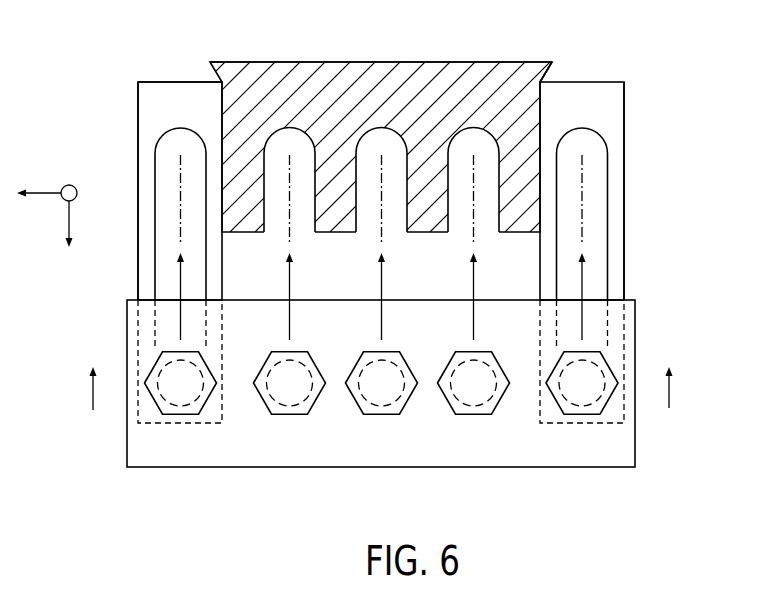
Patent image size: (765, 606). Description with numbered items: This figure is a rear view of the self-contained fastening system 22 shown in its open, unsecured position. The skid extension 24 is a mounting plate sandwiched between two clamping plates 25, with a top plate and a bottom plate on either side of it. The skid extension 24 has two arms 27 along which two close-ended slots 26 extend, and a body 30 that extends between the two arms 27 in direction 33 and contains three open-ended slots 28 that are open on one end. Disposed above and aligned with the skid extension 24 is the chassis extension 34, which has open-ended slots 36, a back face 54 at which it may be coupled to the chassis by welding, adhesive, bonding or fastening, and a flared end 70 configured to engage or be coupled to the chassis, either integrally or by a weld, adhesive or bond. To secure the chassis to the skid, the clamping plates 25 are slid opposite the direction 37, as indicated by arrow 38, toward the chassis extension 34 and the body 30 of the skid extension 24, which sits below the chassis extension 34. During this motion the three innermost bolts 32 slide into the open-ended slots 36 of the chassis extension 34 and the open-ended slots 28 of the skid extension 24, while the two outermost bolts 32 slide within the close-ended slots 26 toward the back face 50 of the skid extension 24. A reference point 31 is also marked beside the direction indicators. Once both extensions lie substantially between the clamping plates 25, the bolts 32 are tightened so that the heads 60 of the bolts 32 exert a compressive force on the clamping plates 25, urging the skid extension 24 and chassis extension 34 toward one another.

The self-contained fastening system 22 is at (640, 48).
The skid extension 24 is at (182, 112).
The clamping plates 25 is at (632, 447).
The close-ended slots 26 is at (206, 209).
The arms 27 is at (146, 253).
The open-ended slots 28 is at (278, 212).
The body 30 is at (333, 205).
The axis 31 is at (78, 191).
The bolts 32 is at (287, 390).
The direction 33 is at (45, 193).
The chassis extension 34 is at (242, 76).
The open-ended slots 36 is at (315, 201).
The direction 37 is at (72, 212).
The arrow 38 is at (93, 392).
The back face 50 is at (182, 82).
The back face 54 is at (424, 62).
The heads 60 is at (190, 414).
The flared end 70 is at (550, 72).